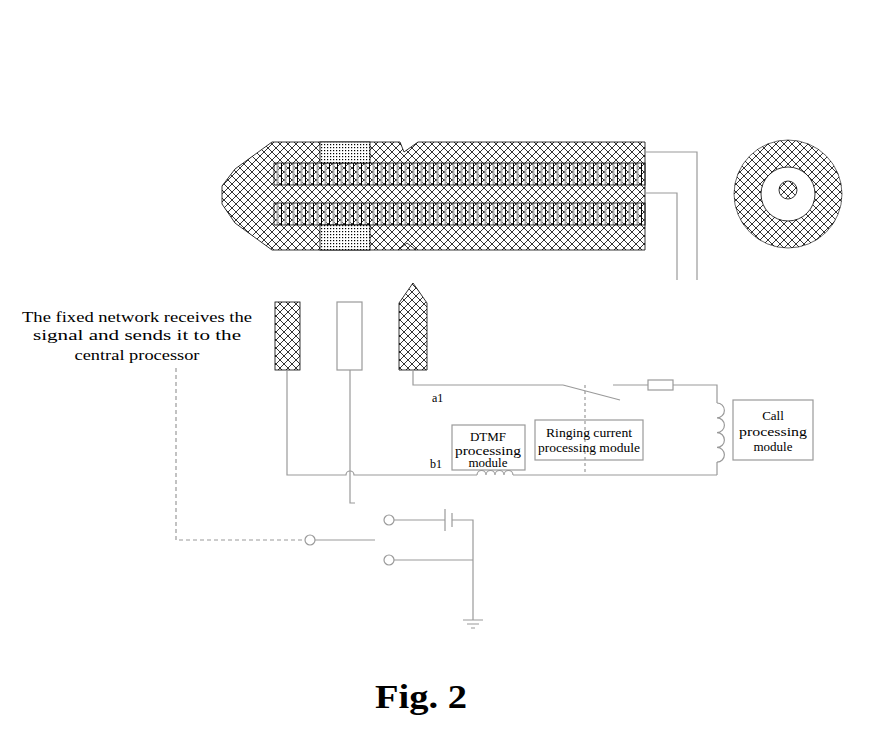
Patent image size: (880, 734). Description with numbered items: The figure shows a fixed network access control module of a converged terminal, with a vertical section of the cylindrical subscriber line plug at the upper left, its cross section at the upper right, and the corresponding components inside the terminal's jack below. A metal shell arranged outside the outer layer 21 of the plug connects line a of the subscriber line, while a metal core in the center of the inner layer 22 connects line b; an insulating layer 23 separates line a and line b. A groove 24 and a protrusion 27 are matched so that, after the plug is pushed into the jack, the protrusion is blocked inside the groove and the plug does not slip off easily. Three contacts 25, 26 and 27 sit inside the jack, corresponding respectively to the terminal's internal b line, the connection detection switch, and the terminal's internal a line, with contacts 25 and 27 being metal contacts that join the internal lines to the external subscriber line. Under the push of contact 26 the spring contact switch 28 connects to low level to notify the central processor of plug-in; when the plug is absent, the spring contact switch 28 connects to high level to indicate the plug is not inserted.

The outer layer 21 is at (753, 150).
The inner layer 22 is at (272, 140).
The insulating layer 23 is at (347, 140).
The groove 24 is at (407, 245).
The contact 25 is at (274, 337).
The contact 26 is at (362, 337).
The contact 27 is at (428, 335).
The spring contact switch 28 is at (345, 535).